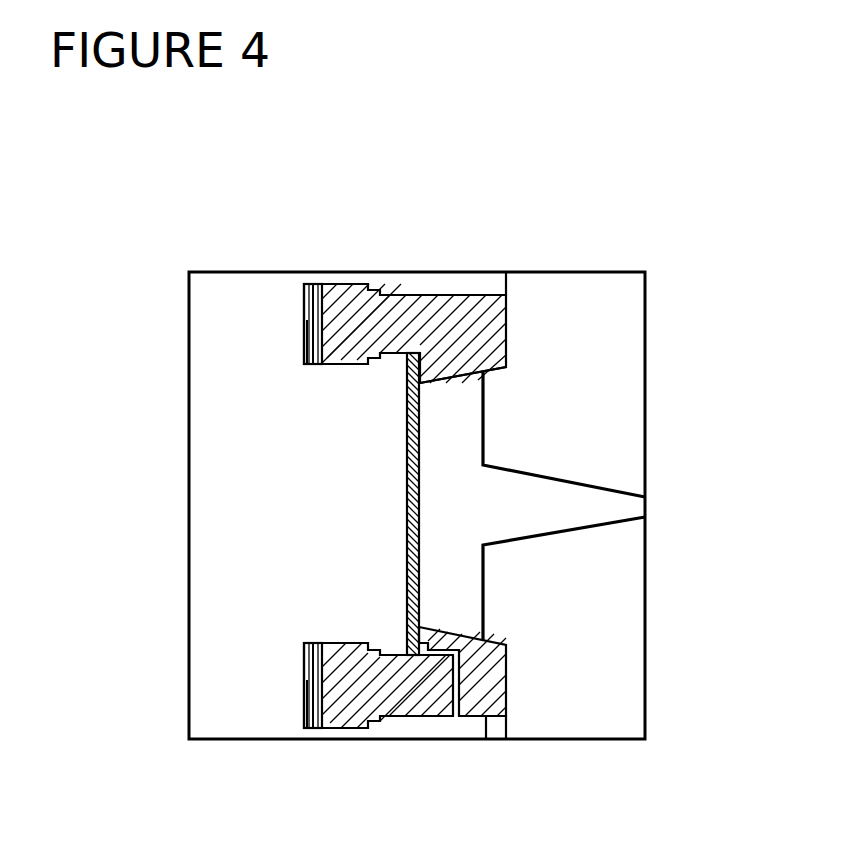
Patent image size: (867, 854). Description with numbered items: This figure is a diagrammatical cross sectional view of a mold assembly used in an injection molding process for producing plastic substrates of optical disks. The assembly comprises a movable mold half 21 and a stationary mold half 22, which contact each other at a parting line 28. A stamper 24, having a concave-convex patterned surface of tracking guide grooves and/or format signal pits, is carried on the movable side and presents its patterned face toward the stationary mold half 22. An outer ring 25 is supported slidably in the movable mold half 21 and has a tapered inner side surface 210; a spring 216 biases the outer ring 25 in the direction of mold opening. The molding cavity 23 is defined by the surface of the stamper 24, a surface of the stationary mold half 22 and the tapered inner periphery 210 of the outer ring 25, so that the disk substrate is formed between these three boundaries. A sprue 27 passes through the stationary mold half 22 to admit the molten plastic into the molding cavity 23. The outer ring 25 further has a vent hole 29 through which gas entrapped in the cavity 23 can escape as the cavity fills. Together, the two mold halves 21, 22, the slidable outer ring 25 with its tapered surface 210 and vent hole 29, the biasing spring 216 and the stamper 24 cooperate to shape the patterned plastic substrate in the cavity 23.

The movable mold half 21 is at (267, 500).
The spring 216 is at (303, 282).
The outer ring 25 is at (507, 311).
The parting line 28 is at (507, 280).
The tapered inner side surface 210 is at (483, 386).
The stamper 24 is at (408, 510).
The molding cavity 23 is at (450, 480).
The stationary mold half 22 is at (588, 437).
The sprue 27 is at (573, 500).
The vent hole 29 is at (462, 690).